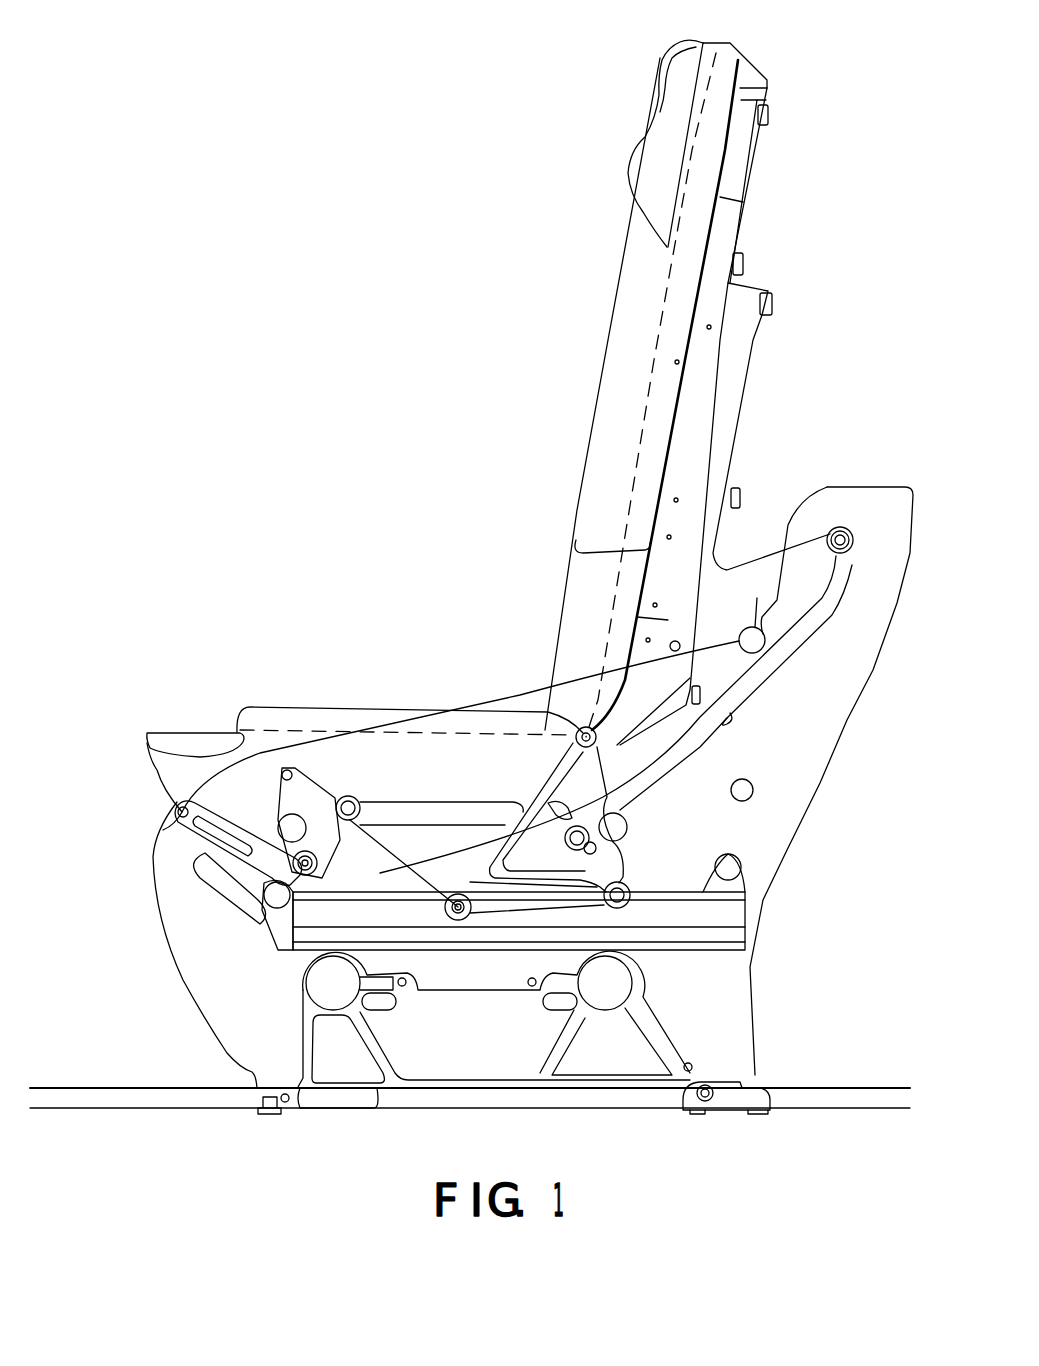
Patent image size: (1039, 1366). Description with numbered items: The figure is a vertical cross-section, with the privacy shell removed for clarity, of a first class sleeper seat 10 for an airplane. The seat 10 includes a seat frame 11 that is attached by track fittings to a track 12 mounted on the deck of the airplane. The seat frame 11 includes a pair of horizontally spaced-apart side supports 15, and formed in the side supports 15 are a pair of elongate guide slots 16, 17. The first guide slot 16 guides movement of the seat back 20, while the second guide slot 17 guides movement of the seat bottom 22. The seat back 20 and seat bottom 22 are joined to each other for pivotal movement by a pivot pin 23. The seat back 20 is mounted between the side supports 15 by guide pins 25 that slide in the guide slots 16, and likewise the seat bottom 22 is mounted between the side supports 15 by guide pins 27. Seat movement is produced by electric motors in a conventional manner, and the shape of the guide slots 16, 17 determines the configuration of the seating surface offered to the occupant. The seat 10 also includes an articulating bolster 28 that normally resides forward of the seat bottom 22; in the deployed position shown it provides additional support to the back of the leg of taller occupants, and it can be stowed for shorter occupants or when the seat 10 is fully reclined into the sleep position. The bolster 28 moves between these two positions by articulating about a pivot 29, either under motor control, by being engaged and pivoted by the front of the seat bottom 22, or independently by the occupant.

The first class sleeper seat 10 is at (330, 300).
The seat frame 11 is at (448, 993).
The track 12 is at (193, 1112).
The side supports 15 is at (763, 837).
The guide slot 16 is at (727, 717).
The guide slot 17 is at (510, 915).
The seat back 20 is at (633, 275).
The seat bottom 22 is at (300, 720).
The pivot pin 23 is at (578, 728).
The guide pins 25 is at (833, 527).
The guide pins 27 is at (633, 897).
The articulating bolster 28 is at (160, 775).
The pivot 29 is at (168, 815).